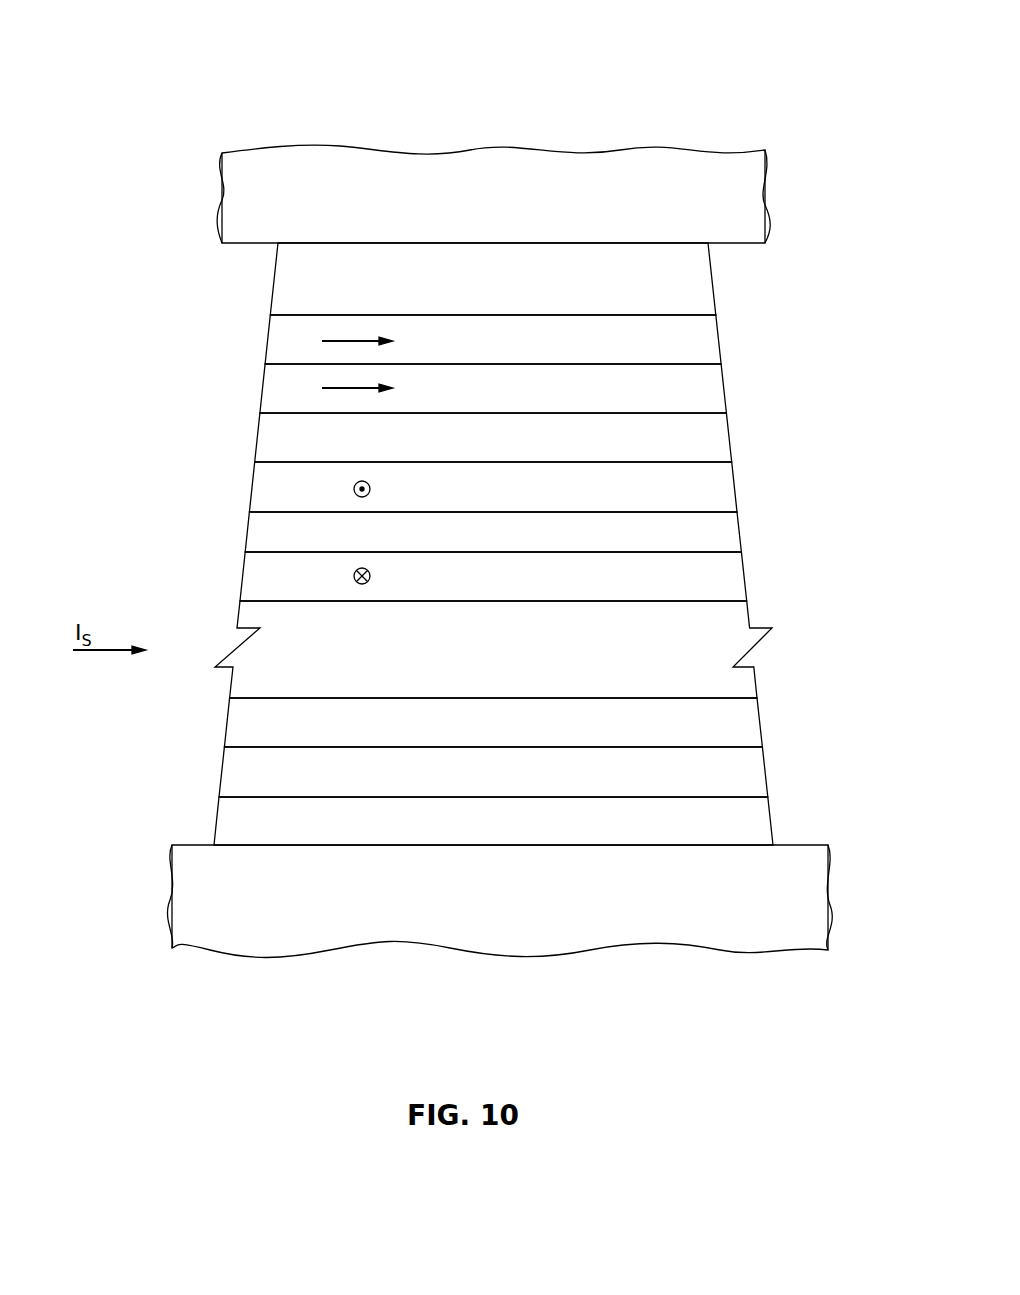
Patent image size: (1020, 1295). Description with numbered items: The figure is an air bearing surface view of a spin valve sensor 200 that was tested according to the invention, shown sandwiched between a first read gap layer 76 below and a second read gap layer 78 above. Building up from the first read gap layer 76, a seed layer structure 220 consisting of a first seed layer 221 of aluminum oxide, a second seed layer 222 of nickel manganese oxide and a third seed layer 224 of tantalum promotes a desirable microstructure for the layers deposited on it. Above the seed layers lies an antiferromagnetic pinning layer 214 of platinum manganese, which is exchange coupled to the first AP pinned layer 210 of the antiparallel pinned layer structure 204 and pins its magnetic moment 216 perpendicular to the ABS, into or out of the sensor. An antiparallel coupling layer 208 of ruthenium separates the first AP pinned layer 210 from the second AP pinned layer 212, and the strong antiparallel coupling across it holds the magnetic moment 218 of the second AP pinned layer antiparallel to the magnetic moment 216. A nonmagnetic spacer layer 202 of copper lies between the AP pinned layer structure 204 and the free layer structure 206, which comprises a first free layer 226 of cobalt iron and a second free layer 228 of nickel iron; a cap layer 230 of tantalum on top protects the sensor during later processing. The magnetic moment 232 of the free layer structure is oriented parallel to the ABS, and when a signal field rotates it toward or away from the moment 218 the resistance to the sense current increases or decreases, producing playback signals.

The second read gap layer 78 is at (763, 178).
The first read gap layer 76 is at (790, 943).
The spin valve sensor 200 is at (33, 243).
The cap layer 230 is at (716, 283).
The free layer structure 206 is at (167, 413).
The second free layer 228 is at (719, 339).
The first free layer 226 is at (724, 385).
The magnetic moment of the free layer structure 232 is at (342, 388).
The spacer layer 202 is at (729, 433).
The antiparallel pinned layer structure 204 is at (107, 601).
The second antiparallel pinned layer 212 is at (734, 483).
The magnetic moment of the second AP pinned layer 218 is at (353, 489).
The antiparallel coupling layer 208 is at (739, 529).
The first antiparallel pinned layer 210 is at (743, 573).
The magnetic moment of the first AP pinned layer 216 is at (353, 576).
The antiferromagnetic pinning layer 214 is at (756, 678).
The seed layer structure 220 is at (230, 698).
The third seed layer 224 is at (759, 722).
The second seed layer 222 is at (764, 769).
The first seed layer 221 is at (770, 815).